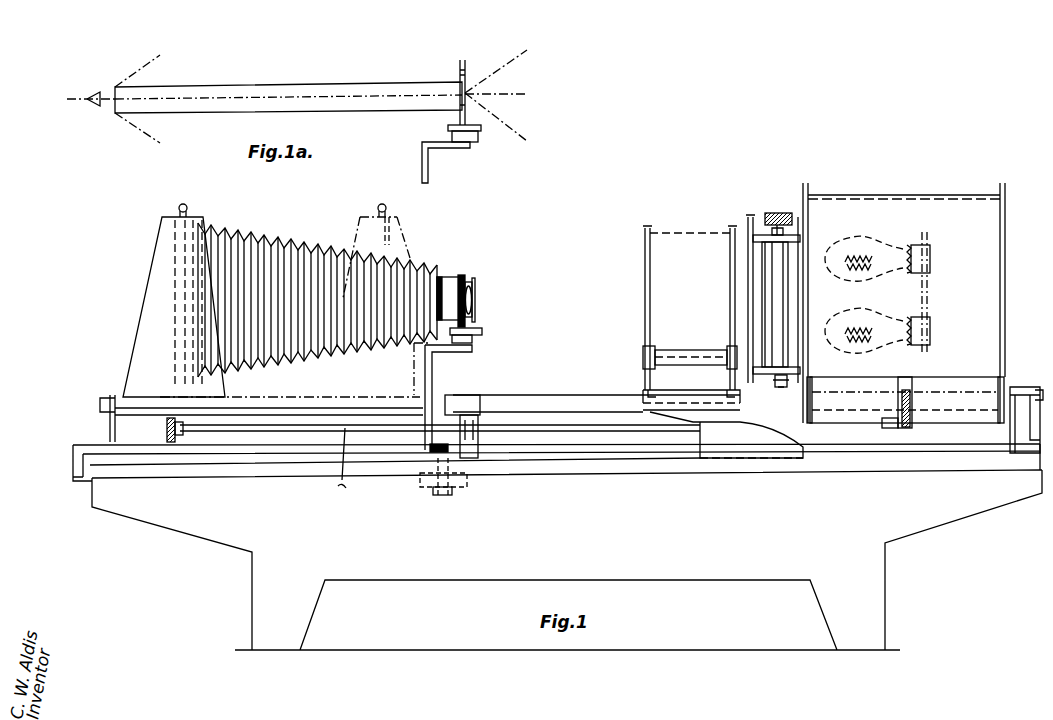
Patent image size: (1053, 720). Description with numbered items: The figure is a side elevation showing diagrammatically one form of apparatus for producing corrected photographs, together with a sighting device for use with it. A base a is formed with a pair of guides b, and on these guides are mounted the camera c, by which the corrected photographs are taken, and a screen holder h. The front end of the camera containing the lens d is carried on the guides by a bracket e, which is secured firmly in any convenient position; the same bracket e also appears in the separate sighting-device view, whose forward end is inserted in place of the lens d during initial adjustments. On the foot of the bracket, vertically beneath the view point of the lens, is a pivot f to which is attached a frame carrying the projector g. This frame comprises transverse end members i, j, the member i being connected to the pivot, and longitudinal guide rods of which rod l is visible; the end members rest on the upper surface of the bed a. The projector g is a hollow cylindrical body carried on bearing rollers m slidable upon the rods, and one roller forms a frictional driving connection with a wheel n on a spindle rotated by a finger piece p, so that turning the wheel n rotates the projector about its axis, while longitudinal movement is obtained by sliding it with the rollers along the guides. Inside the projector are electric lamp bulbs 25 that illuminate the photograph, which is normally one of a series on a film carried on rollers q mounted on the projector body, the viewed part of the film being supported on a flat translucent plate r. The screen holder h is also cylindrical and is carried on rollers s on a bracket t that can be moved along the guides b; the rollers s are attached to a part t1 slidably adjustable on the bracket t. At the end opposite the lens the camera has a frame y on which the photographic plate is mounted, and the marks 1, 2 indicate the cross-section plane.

In FIG. 1, the base a is at (200, 535).
In FIG. 1, the guides b is at (597, 470).
In FIG. 1, the camera c is at (283, 239).
In FIG. 1, the lens d is at (473, 300).
In FIG. 1A, the bracket e is at (422, 165).
In FIG. 1, the bracket e is at (432, 376).
In FIG. 1, the pivot f is at (478, 432).
In FIG. 1, the projector g is at (952, 194).
In FIG. 1, the screen holder h is at (688, 232).
In FIG. 1, the transverse end member i is at (476, 397).
In FIG. 1, the transverse end member j is at (1015, 386).
In FIG. 1, the longitudinal guide rod l is at (558, 400).
In FIG. 1, the bearing rollers m is at (965, 385).
In FIG. 1, the wheel n is at (908, 430).
In FIG. 1, the finger piece p is at (166, 426).
In FIG. 1, the rollers q is at (783, 284).
In FIG. 1, the translucent plate r is at (748, 284).
In FIG. 1, the rollers s is at (690, 366).
In FIG. 1, the bracket t is at (668, 420).
In FIG. 1, the part t1 is at (643, 368).
In FIG. 1, the frame y is at (156, 262).
In FIG. 1, the section line 1 is at (462, 275).
In FIG. 1, the section line 2 is at (386, 303).
In FIG. 1, the electric lamp bulbs 25 is at (893, 285).